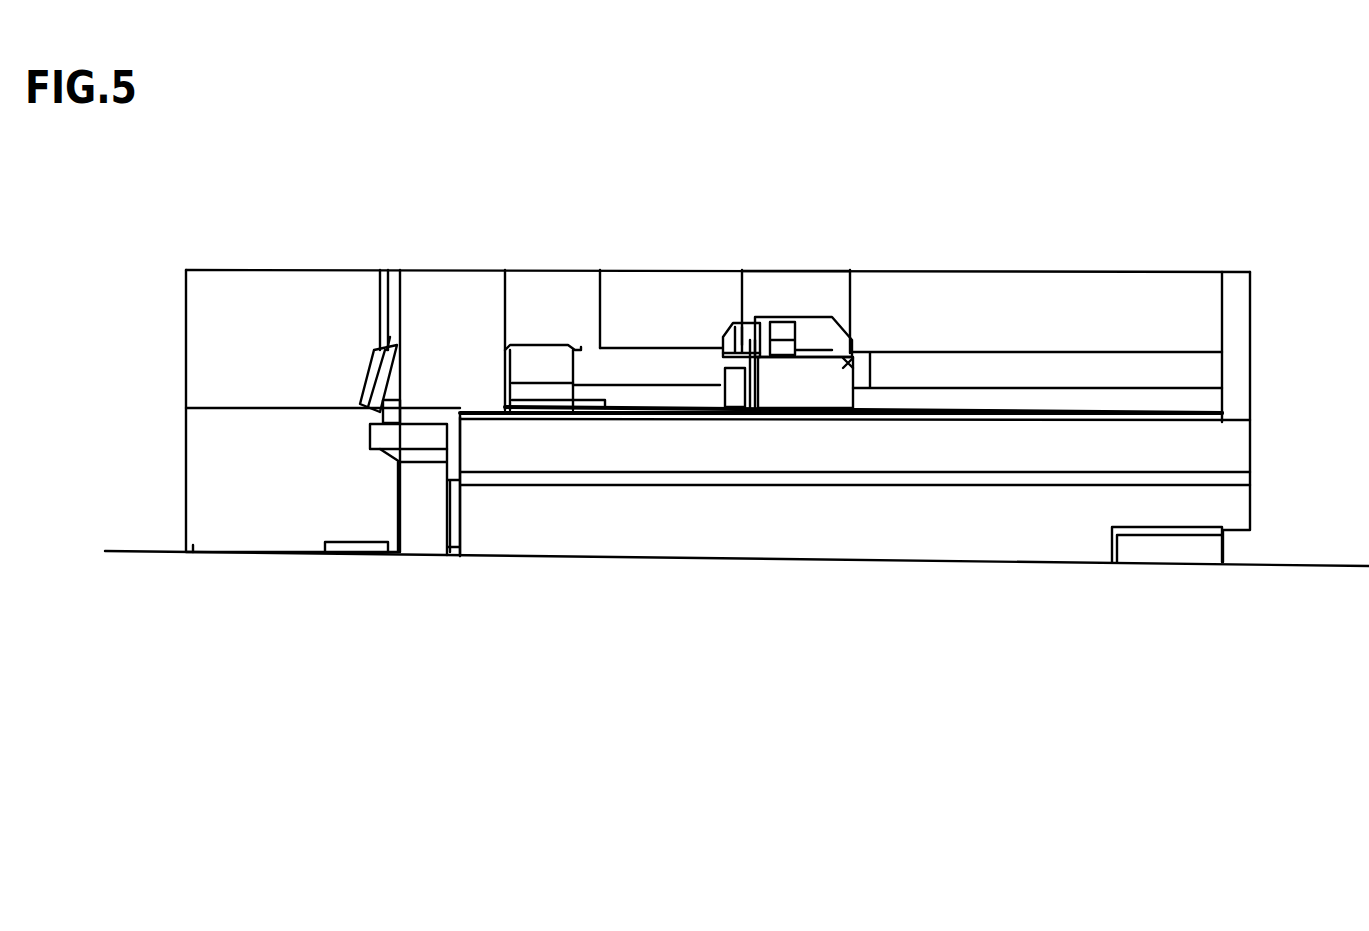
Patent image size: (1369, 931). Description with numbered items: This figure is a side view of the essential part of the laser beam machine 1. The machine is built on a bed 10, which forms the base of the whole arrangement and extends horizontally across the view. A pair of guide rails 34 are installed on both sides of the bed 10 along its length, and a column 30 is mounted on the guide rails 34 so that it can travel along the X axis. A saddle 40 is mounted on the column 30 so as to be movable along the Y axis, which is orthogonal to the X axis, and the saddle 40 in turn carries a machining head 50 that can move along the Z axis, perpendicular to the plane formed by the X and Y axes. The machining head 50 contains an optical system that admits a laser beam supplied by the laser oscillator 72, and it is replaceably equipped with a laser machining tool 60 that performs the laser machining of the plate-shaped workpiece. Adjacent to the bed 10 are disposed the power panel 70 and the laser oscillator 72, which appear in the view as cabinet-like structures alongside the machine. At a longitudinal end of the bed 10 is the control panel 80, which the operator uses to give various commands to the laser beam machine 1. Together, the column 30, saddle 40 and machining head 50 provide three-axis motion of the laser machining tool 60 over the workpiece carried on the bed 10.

The laser beam machine 1 is at (1042, 245).
The bed 10 is at (818, 522).
The column 30 is at (848, 363).
The guide rails 34 is at (955, 413).
The saddle 40 is at (812, 318).
The machining head 50 is at (724, 357).
The laser machining tool 60 is at (727, 408).
The power panel 70 is at (235, 283).
The laser oscillator 72 is at (765, 283).
The control panel 80 is at (375, 350).